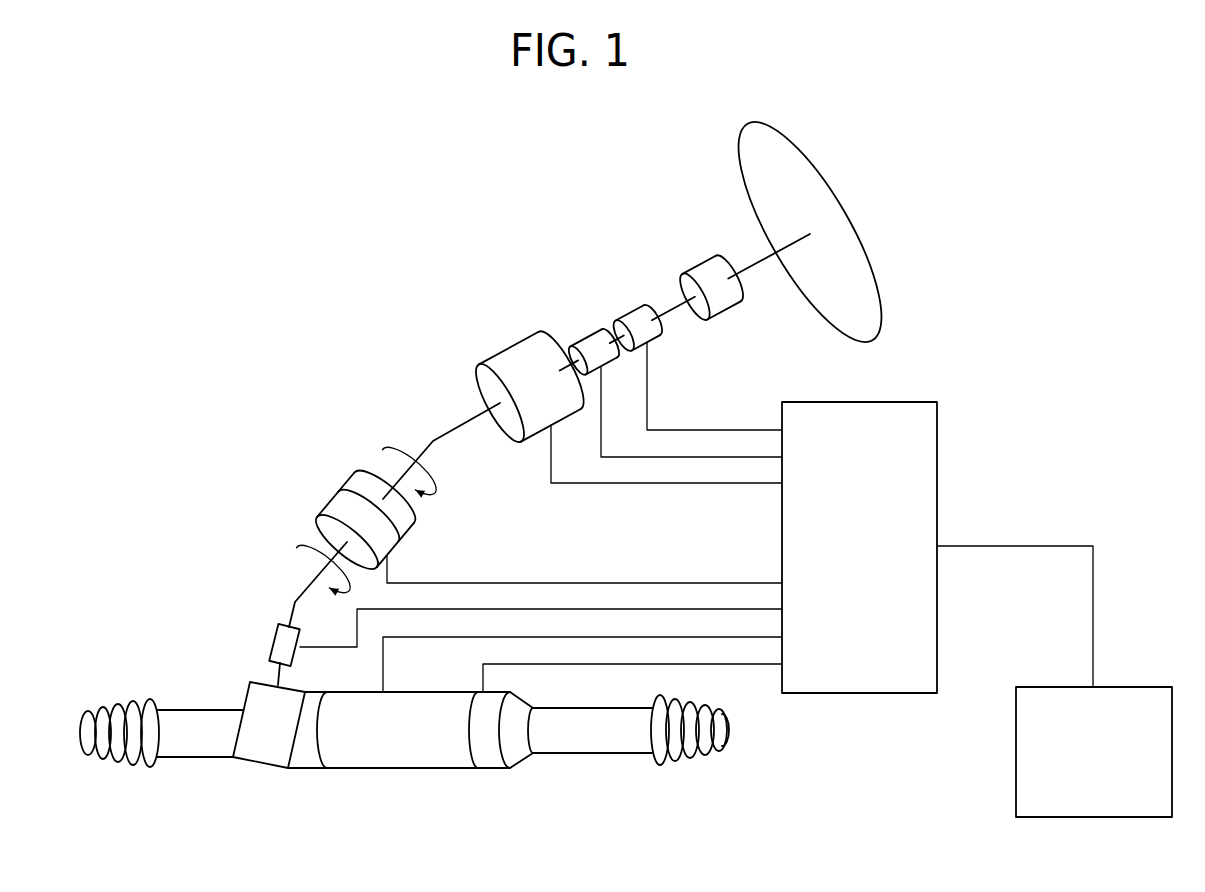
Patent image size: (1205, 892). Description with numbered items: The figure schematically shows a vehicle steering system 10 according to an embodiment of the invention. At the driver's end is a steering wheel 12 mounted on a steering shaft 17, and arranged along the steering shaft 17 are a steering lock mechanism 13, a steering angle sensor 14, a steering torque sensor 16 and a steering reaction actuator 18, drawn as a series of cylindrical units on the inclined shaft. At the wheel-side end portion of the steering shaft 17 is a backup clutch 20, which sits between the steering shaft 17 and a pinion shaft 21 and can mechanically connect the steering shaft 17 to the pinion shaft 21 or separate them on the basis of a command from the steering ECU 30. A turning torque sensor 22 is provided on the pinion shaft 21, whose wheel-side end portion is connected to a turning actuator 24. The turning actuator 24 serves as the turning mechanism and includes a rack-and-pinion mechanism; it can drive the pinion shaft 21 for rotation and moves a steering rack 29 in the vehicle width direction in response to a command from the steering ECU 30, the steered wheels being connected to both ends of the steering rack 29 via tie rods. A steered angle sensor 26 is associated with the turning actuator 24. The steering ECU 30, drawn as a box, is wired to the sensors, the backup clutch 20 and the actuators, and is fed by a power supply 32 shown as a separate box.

The vehicle steering system 10 is at (385, 216).
The steering wheel 12 is at (748, 122).
The steering lock mechanism 13 is at (698, 262).
The steering angle sensor 14 is at (625, 307).
The steering torque sensor 16 is at (582, 335).
The steering shaft 17 is at (753, 257).
The steering reaction actuator 18 is at (508, 347).
The backup clutch 20 is at (345, 481).
The pinion shaft 21 is at (292, 596).
The turning torque sensor 22 is at (272, 642).
The turning actuator 24 is at (337, 769).
The steered angle sensor 26 is at (495, 769).
The steering rack 29 is at (193, 757).
The steering ECU 30 is at (898, 400).
The power supply 32 is at (1133, 686).